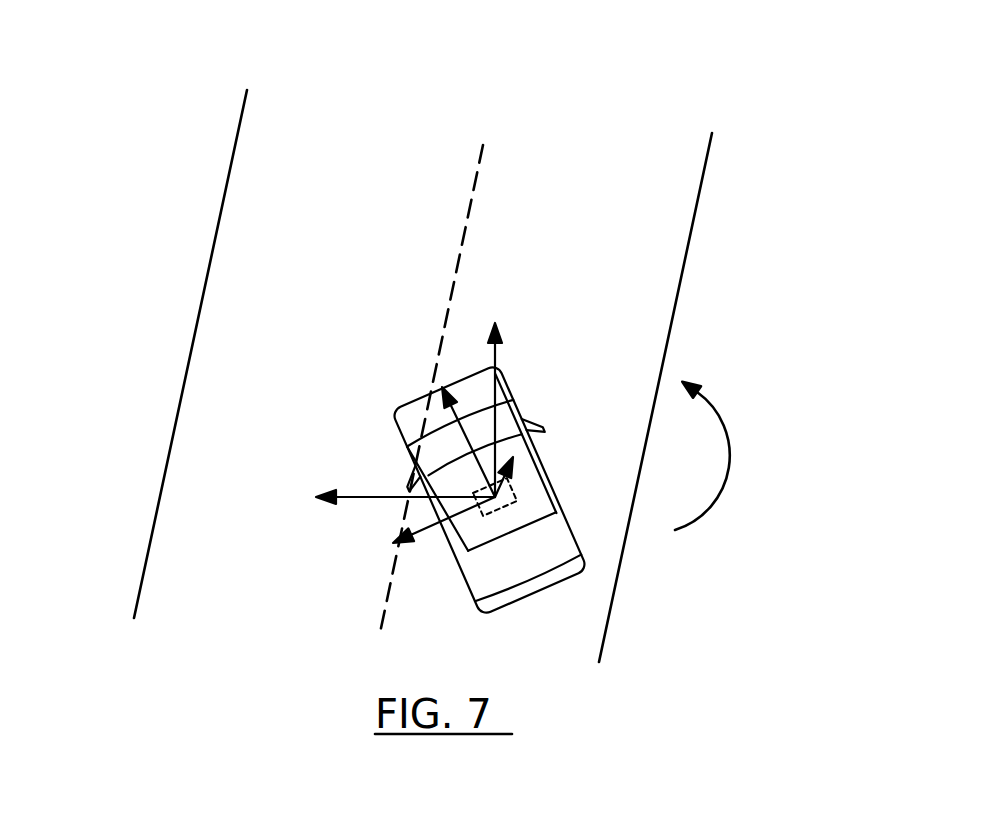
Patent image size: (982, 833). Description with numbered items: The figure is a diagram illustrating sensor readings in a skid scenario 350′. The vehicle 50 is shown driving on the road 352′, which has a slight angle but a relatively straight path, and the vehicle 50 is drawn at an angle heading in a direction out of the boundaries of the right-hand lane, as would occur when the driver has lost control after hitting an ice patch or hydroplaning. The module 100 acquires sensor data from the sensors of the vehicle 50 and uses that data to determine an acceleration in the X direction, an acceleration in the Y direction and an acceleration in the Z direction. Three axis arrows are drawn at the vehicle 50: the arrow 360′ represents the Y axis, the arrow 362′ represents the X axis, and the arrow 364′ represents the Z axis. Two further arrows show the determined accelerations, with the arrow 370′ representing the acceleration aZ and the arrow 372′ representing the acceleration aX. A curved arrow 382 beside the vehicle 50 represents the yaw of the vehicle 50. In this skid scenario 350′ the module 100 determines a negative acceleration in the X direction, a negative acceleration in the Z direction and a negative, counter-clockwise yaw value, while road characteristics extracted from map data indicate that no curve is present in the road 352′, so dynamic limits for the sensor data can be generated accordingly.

The skid scenario 350′ is at (416, 341).
The road 352′ is at (221, 212).
The vehicle 50 is at (513, 401).
The module 100 is at (493, 512).
The arrow 360′ is at (511, 475).
The arrow 362′ is at (366, 497).
The arrow 364′ is at (494, 361).
The arrow 370′ is at (441, 411).
The arrow 372′ is at (427, 527).
The curved arrow 382 is at (730, 450).